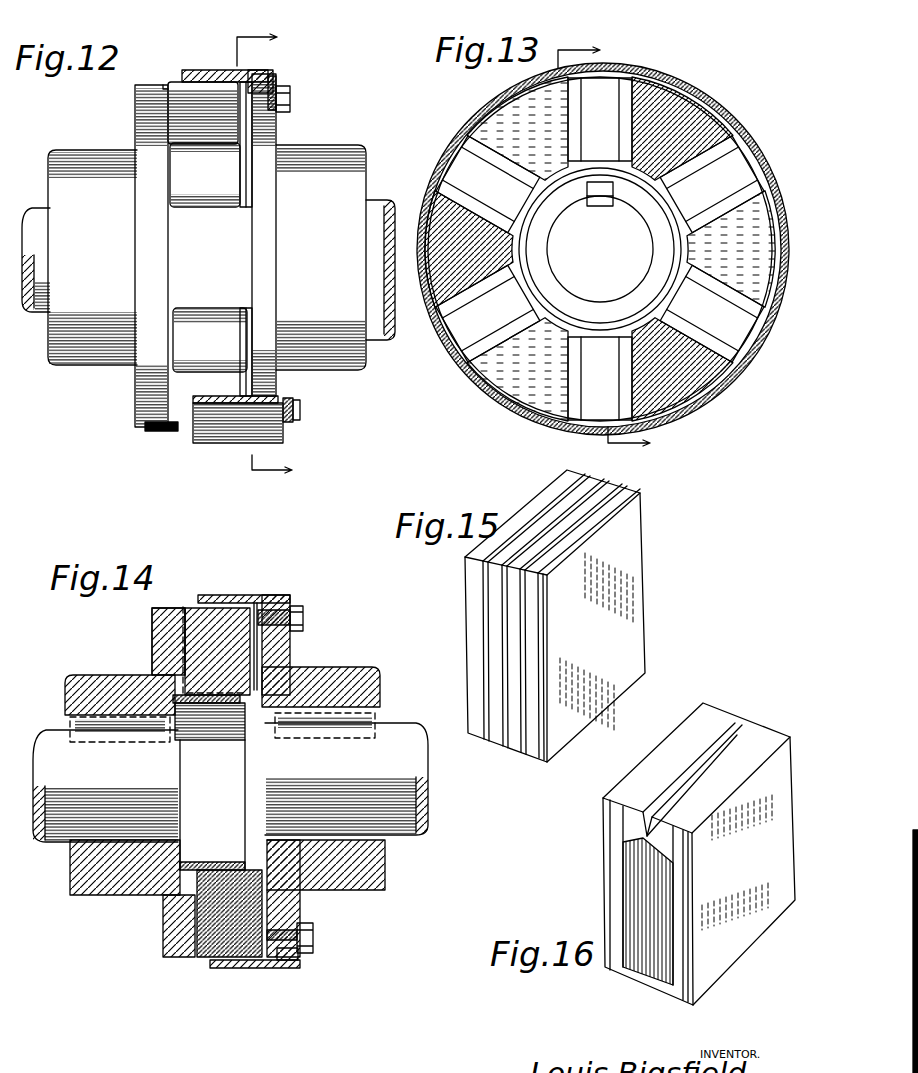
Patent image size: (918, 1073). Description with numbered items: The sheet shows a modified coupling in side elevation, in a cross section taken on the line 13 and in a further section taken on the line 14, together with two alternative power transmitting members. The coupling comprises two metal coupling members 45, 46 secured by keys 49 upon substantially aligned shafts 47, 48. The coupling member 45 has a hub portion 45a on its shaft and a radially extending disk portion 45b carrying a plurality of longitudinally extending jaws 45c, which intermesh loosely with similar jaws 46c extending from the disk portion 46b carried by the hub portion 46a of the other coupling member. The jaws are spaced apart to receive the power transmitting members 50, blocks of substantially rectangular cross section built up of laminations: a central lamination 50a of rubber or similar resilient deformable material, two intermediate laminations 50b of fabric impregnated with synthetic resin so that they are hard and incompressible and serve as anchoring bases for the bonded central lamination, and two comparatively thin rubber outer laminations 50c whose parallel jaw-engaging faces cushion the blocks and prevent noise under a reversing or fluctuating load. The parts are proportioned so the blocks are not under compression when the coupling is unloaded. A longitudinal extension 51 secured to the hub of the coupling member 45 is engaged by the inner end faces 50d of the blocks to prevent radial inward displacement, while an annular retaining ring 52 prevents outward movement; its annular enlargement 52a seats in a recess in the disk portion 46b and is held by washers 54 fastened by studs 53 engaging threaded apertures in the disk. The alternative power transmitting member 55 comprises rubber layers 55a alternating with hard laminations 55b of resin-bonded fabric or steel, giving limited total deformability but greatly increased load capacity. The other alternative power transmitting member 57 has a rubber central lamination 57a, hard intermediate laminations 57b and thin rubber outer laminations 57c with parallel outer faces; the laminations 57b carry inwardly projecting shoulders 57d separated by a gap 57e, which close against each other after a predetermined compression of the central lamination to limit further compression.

In FIG. 12, the section line 13— 13 is at (264, 256).
In FIG. 13, the section line 14— 14 is at (604, 247).
In FIG. 12, the coupling member 45 is at (72, 160).
In FIG. 14, the coupling member 45 is at (78, 678).
In FIG. 12, the hub portion 45a is at (90, 363).
In FIG. 14, the hub portion 45a is at (76, 897).
In FIG. 12, the disk portion 45b is at (155, 427).
In FIG. 14, the disk portion 45b is at (165, 936).
In FIG. 12, the jaws 45c is at (192, 392).
In FIG. 13, the jaws 45c is at (510, 122).
In FIG. 14, the jaws 45c is at (205, 632).
In FIG. 12, the coupling member 46 is at (326, 157).
In FIG. 14, the coupling member 46 is at (356, 678).
In FIG. 12, the hub portion 46a is at (350, 173).
In FIG. 14, the hub portion 46a is at (380, 888).
In FIG. 12, the disk portion 46b is at (272, 374).
In FIG. 14, the disk portion 46b is at (281, 776).
In FIG. 12, the jaws 46c is at (207, 257).
In FIG. 13, the jaws 46c is at (670, 115).
In FIG. 14, the jaws 46c is at (200, 962).
In FIG. 12, the shaft 47 is at (43, 318).
In FIG. 13, the shaft 47 is at (600, 249).
In FIG. 14, the shaft 47 is at (45, 845).
In FIG. 12, the shaft 48 is at (377, 208).
In FIG. 14, the shaft 48 is at (405, 835).
In FIG. 13, the keys 49 is at (603, 200).
In FIG. 14, the keys 49 is at (70, 720).
In FIG. 12, the power transmitting members 50 is at (193, 172).
In FIG. 13, the power transmitting members 50 is at (603, 70).
In FIG. 14, the power transmitting members 50 is at (229, 605).
In FIG. 13, the central lamination 50a is at (742, 160).
In FIG. 13, the intermediate laminations 50b is at (746, 145).
In FIG. 13, the outer laminations 50c is at (730, 133).
In FIG. 13, the inner end faces 50d is at (537, 289).
In FIG. 13, the longitudinal extension 51 is at (518, 262).
In FIG. 14, the longitudinal extension 51 is at (203, 860).
In FIG. 12, the annular retaining ring 52 is at (240, 72).
In FIG. 14, the annular retaining ring 52 is at (246, 596).
In FIG. 12, the annular enlargement 52a is at (270, 72).
In FIG. 12, the studs 53 is at (291, 98).
In FIG. 14, the studs 53 is at (305, 620).
In FIG. 12, the washers 54 is at (277, 82).
In FIG. 14, the washers 54 is at (291, 610).
In FIG. 15, the power transmitting member 55 is at (455, 593).
In FIG. 15, the layers 55a is at (600, 515).
In FIG. 15, the laminations 55b is at (590, 508).
In FIG. 16, the power transmitting member 57 is at (590, 834).
In FIG. 16, the central lamination 57a is at (650, 985).
In FIG. 16, the intermediate laminations 57b is at (622, 975).
In FIG. 16, the outer laminations 57c is at (610, 968).
In FIG. 16, the shoulders 57d is at (747, 732).
In FIG. 16, the gap 57e is at (738, 730).